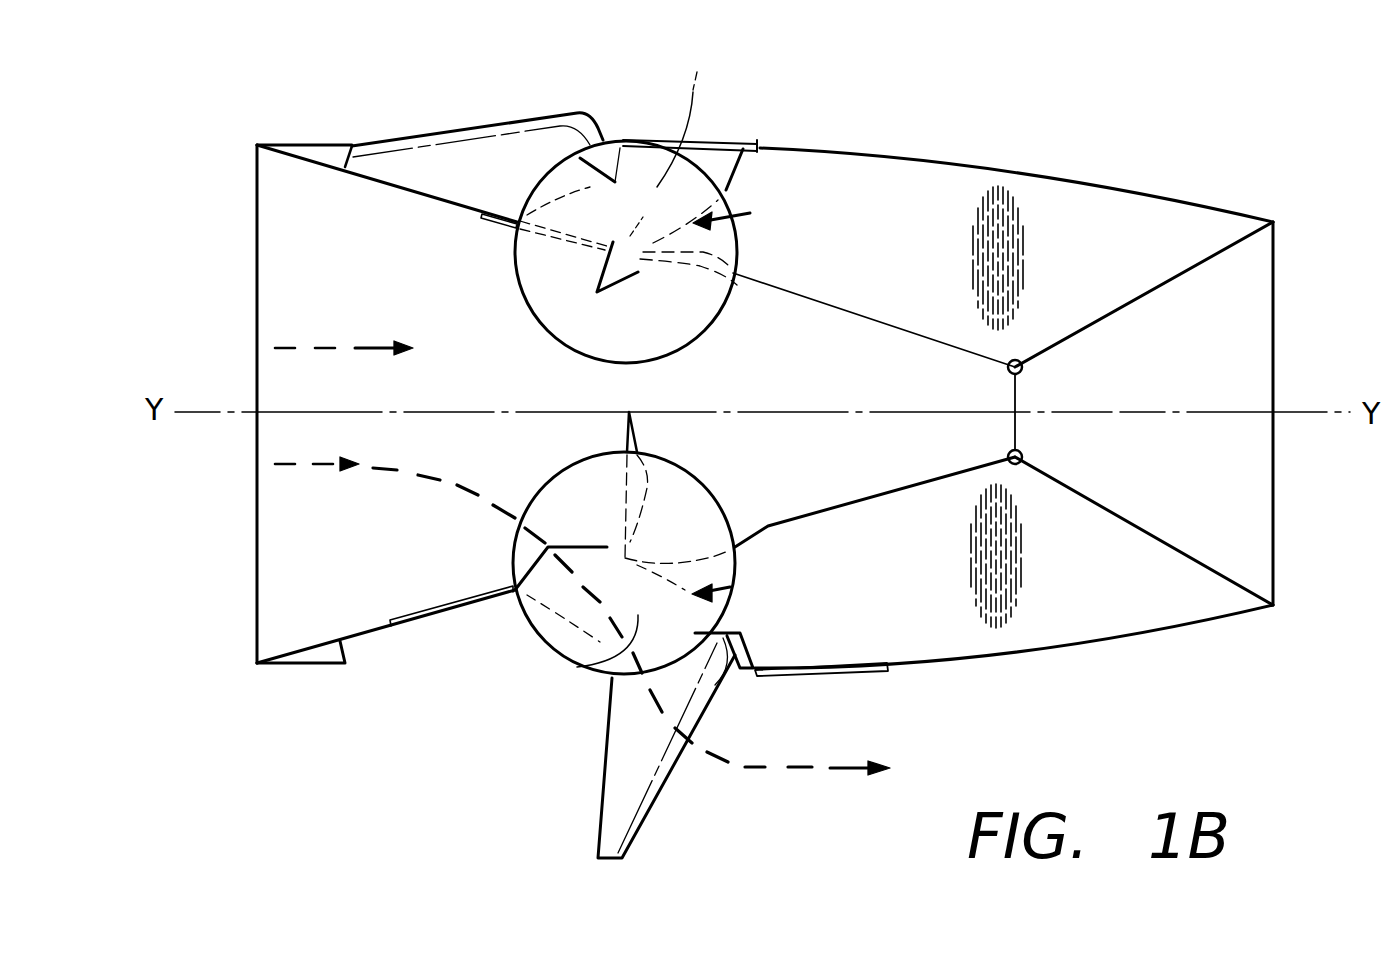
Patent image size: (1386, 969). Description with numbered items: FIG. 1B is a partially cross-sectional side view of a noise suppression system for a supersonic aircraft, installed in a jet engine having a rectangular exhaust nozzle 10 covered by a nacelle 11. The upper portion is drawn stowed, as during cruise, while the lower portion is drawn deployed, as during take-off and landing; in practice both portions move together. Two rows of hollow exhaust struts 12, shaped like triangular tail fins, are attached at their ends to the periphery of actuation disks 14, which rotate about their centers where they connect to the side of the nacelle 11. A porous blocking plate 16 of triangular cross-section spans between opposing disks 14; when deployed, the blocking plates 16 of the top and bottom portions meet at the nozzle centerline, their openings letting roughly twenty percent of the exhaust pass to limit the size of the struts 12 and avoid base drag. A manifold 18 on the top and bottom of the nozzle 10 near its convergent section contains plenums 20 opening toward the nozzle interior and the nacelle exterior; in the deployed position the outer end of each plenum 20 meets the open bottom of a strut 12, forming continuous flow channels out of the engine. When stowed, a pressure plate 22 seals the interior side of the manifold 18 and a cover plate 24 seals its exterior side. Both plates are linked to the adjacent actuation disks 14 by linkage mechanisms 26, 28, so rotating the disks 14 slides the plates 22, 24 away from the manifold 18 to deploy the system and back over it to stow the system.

The exhaust nozzle 10 is at (765, 413).
The nacelle 11 is at (1033, 180).
The exhaust strut 12 is at (563, 112).
The actuation disk 14 is at (535, 298).
The porous blocking plate 16 is at (743, 283).
The manifold 18 is at (755, 212).
The plenum 20 is at (512, 672).
The pressure plate 22 is at (497, 222).
The cover plate 24 is at (727, 148).
The linkage mechanism 26 is at (623, 152).
The linkage mechanism 28 is at (623, 282).